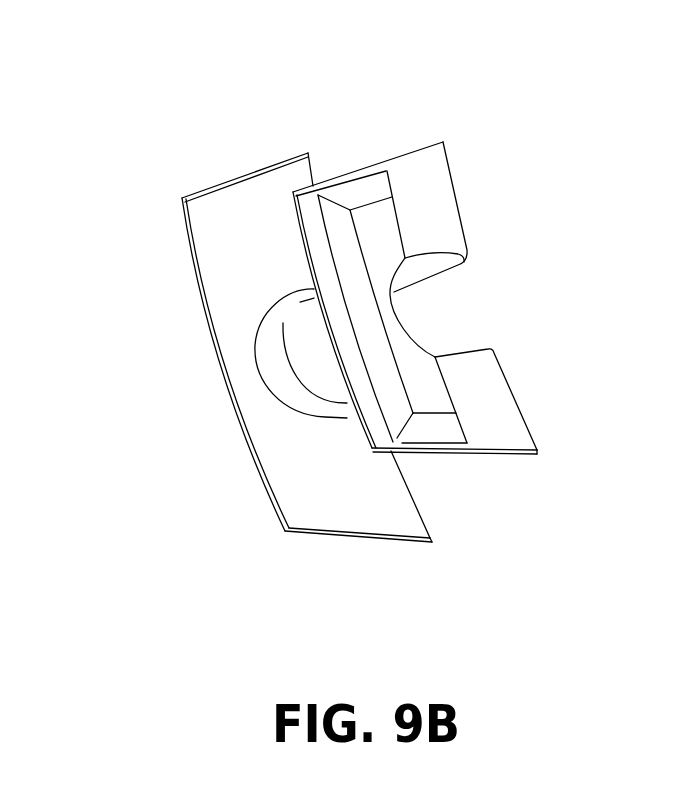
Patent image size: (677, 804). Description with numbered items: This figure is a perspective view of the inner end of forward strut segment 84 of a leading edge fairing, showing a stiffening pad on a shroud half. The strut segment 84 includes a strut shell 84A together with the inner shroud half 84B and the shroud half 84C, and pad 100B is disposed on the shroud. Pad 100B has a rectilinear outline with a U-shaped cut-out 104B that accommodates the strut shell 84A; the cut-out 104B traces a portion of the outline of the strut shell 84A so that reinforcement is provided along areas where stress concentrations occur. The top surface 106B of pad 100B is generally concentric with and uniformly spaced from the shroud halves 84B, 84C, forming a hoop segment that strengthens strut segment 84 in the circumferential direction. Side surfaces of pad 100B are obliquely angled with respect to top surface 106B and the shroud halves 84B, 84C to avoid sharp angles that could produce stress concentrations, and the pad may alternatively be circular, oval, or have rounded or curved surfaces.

The forward strut segment 84 is at (396, 323).
The strut shell 84A is at (303, 351).
The inner shroud half 84B is at (345, 523).
The inner shroud half 84C is at (435, 217).
The pad 100B is at (376, 234).
The U-shaped cut-out 104B is at (393, 312).
The top surface 106B is at (422, 395).